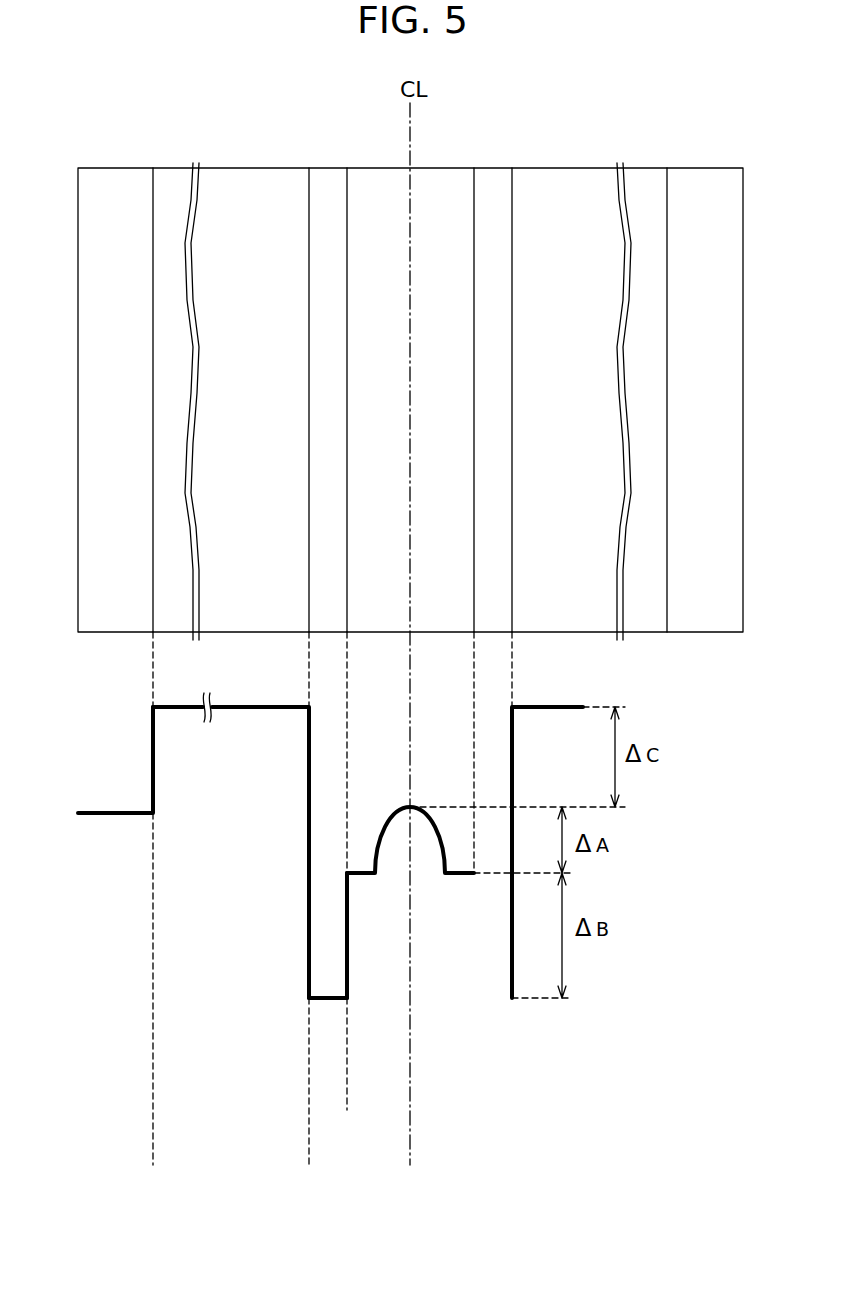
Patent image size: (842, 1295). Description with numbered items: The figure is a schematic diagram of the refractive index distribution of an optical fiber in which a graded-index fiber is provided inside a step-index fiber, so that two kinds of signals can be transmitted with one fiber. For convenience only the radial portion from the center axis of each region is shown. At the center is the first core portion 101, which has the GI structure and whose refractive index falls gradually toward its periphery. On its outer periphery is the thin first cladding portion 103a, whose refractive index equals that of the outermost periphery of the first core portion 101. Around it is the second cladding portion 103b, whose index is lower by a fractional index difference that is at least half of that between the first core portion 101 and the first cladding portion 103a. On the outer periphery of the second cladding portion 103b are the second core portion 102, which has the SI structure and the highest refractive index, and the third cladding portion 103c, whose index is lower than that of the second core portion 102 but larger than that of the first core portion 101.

The first core portion 101 is at (372, 193).
The second core portion 102 is at (237, 193).
The first cladding portion 103a is at (350, 987).
The second cladding portion 103b is at (285, 1106).
The third cladding portion 103c is at (141, 1161).